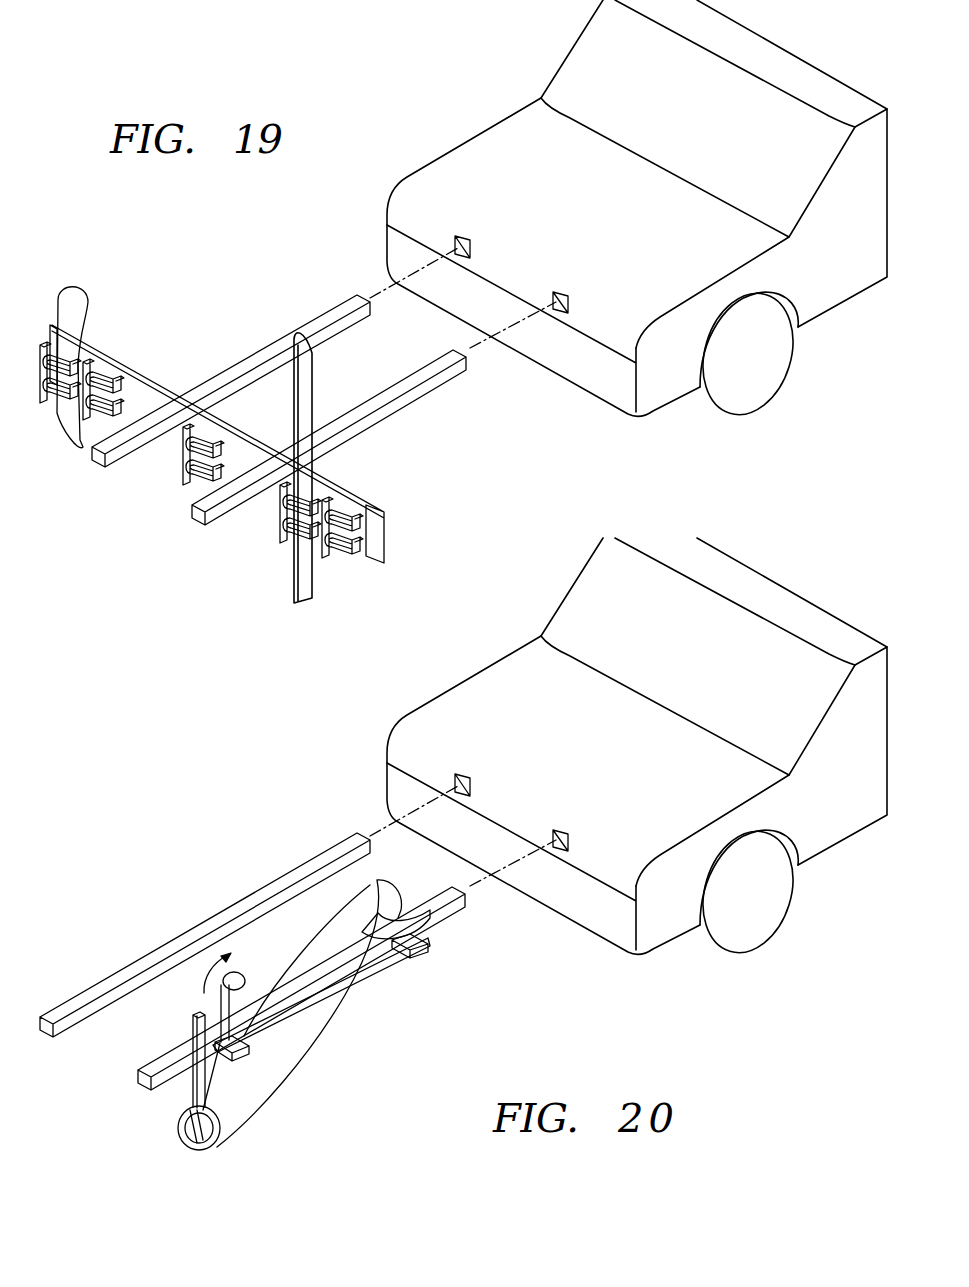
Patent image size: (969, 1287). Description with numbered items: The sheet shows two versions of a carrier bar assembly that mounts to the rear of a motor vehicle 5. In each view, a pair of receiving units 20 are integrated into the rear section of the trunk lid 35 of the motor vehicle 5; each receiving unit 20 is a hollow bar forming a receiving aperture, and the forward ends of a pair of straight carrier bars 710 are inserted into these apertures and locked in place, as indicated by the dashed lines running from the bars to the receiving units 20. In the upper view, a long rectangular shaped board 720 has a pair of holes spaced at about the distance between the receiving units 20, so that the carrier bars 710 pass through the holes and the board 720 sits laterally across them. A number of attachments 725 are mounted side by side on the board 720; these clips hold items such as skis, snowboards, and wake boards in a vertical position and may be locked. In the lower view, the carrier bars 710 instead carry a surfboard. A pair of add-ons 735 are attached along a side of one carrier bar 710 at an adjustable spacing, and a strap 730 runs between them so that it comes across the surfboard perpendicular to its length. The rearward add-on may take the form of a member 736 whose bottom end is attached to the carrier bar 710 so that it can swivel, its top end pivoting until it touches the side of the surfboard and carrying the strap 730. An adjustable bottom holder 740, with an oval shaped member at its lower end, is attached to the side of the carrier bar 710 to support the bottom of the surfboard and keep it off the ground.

In FIG. 19, the motor vehicle 5 is at (620, 213).
In FIG. 20, the motor vehicle 5 is at (620, 751).
In FIG. 19, the receiving unit 20 is at (560, 293).
In FIG. 20, the receiving unit 20 is at (511, 805).
In FIG. 19, the trunk lid 35 is at (397, 212).
In FIG. 20, the trunk lid 35 is at (494, 821).
In FIG. 19, the straight carrier bars 710 is at (423, 372).
In FIG. 20, the straight carrier bars 710 is at (173, 1057).
In FIG. 19, the rectangular shaped board 720 is at (143, 377).
In FIG. 19, the ski clamps 725 is at (187, 483).
In FIG. 20, the strap 730 is at (358, 988).
In FIG. 20, the add-ons 735 is at (243, 1058).
In FIG. 20, the member 736 is at (235, 968).
In FIG. 20, the adjustable bottom holder 740 is at (182, 1124).